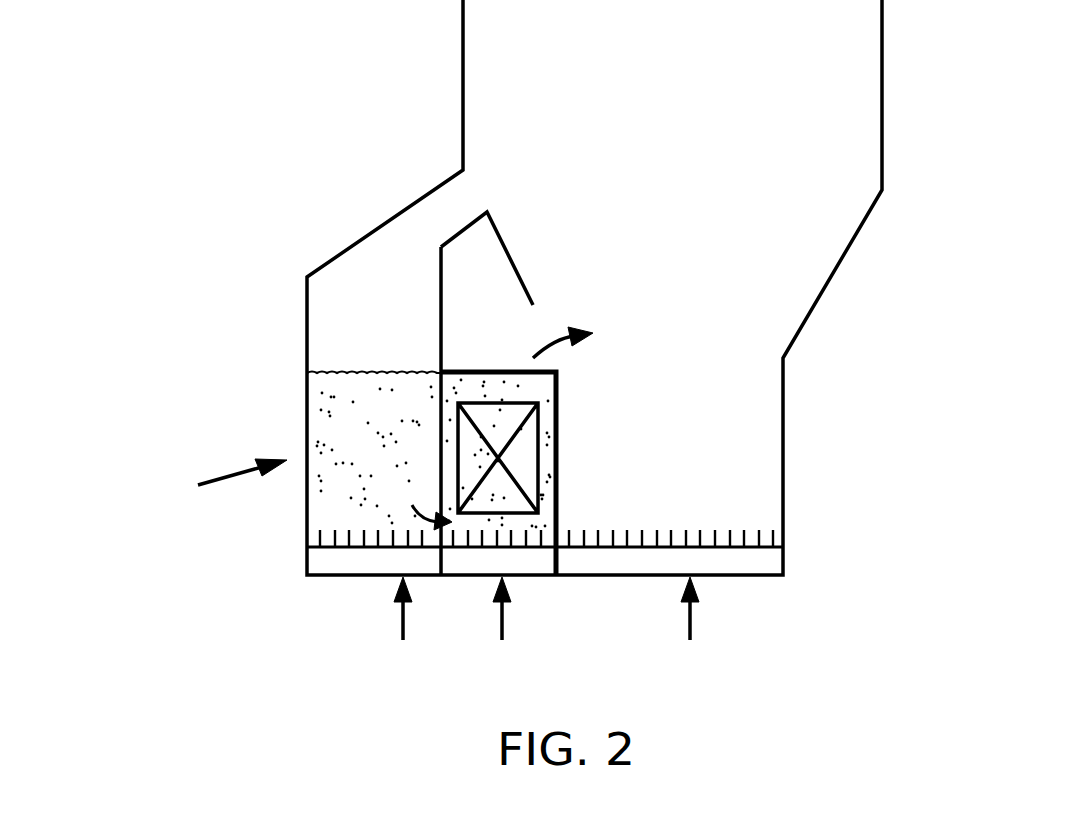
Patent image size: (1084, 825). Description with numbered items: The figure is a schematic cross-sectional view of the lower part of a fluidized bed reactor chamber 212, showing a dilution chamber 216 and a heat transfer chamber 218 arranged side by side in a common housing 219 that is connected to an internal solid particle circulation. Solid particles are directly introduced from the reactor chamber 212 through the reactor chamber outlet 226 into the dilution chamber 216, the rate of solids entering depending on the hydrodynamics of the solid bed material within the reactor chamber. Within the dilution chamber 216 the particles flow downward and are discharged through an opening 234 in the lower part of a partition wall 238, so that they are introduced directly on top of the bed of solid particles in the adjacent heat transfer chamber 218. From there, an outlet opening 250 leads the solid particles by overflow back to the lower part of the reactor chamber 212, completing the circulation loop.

The fluidized bed reactor chamber 212 is at (690, 252).
The dilution chamber 216 is at (420, 437).
The heat transfer chamber 218 is at (499, 450).
The common housing 219 is at (215, 482).
The reactor chamber outlet 226 is at (474, 192).
The opening 234 is at (437, 532).
The partition wall 238 is at (437, 390).
The outlet opening 250 is at (545, 327).